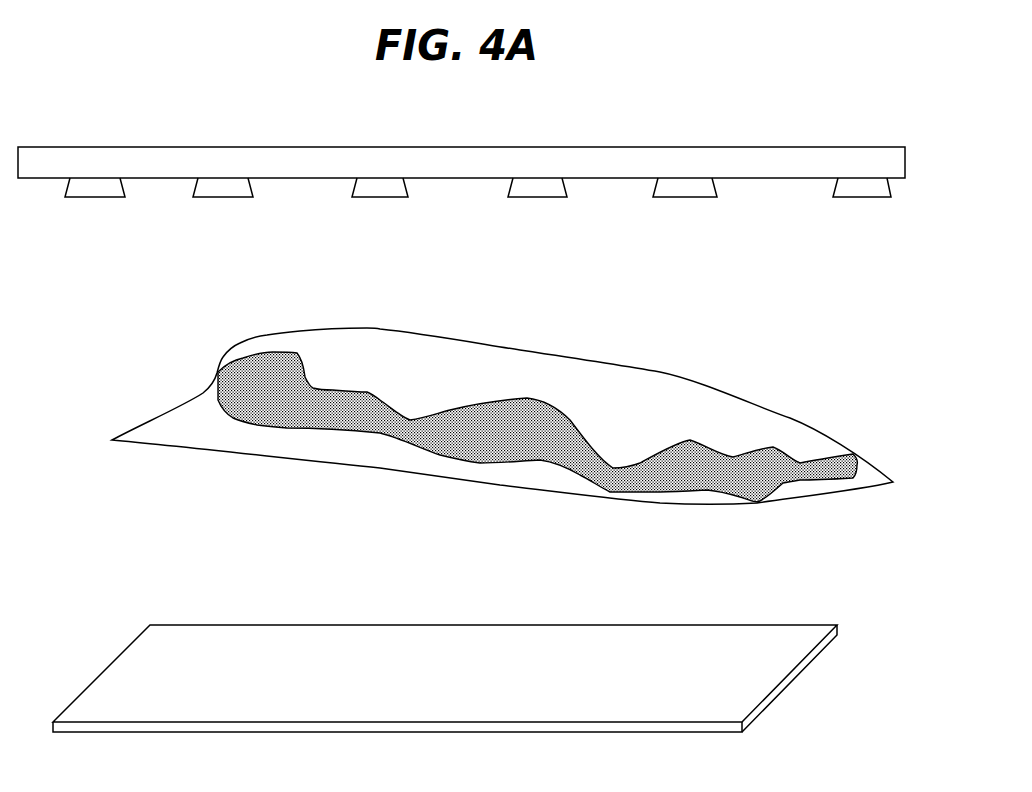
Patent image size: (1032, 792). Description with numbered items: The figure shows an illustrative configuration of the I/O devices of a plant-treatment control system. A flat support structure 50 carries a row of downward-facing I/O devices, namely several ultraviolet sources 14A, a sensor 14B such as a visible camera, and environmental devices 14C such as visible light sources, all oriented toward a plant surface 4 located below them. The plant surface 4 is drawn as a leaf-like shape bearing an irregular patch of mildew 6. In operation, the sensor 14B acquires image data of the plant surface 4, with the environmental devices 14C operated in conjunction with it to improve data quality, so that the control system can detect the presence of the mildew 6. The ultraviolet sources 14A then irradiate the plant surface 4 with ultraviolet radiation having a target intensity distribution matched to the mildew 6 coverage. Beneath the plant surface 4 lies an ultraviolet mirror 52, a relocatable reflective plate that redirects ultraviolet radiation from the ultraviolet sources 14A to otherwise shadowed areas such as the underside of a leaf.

The support structure 50 is at (487, 150).
The ultraviolet sources 14A is at (95, 188).
The sensor 14B is at (537, 188).
The environmental devices 14C is at (222, 188).
The plant surface 4 is at (667, 387).
The mildew 6 is at (513, 415).
The ultraviolet mirror 52 is at (466, 686).